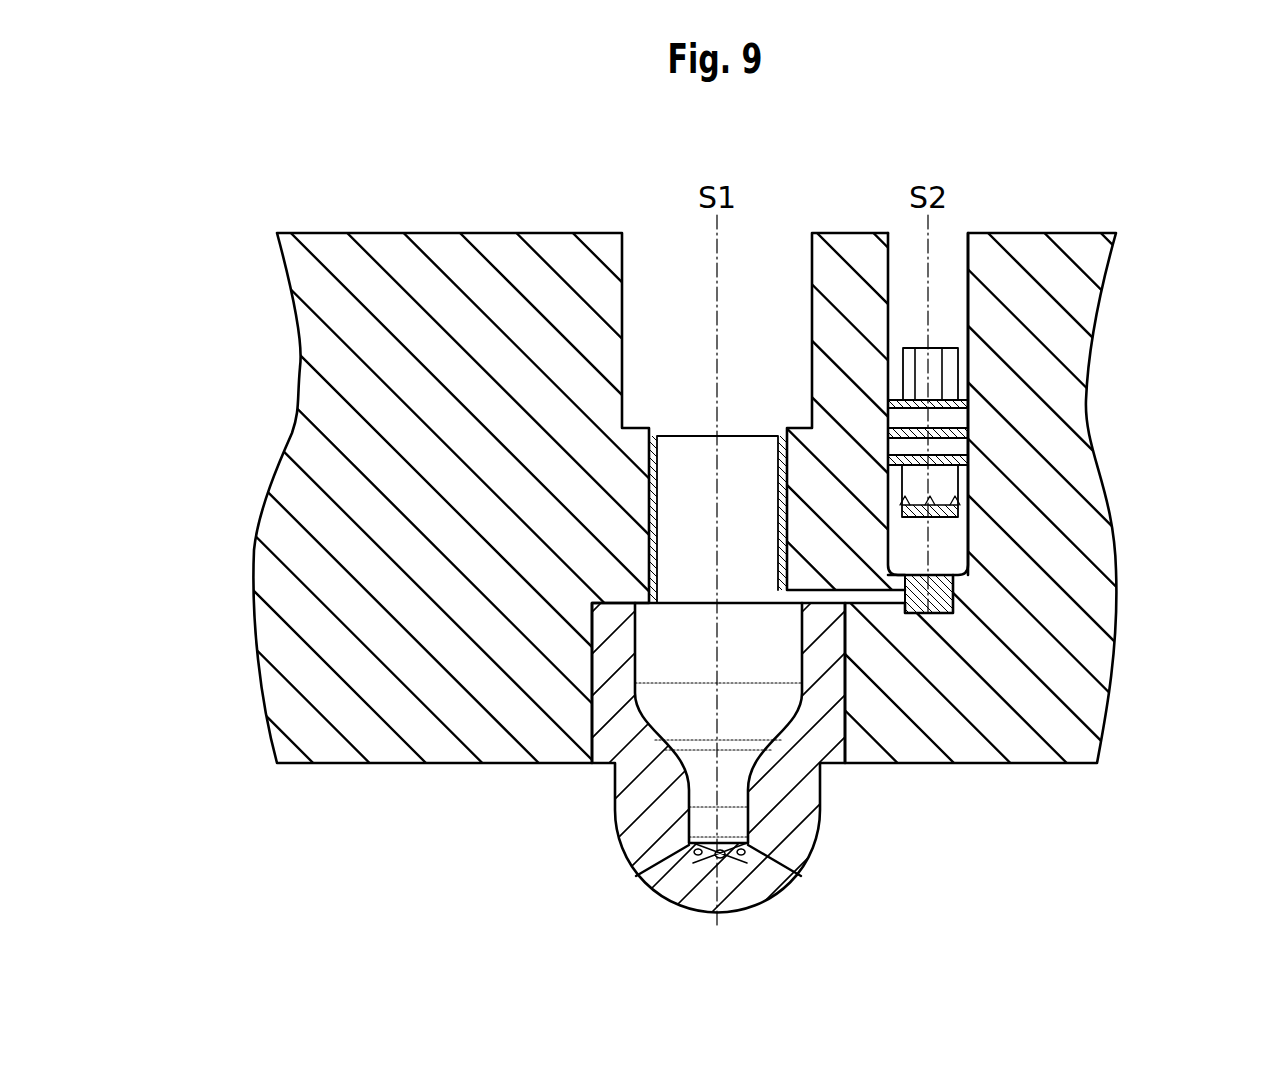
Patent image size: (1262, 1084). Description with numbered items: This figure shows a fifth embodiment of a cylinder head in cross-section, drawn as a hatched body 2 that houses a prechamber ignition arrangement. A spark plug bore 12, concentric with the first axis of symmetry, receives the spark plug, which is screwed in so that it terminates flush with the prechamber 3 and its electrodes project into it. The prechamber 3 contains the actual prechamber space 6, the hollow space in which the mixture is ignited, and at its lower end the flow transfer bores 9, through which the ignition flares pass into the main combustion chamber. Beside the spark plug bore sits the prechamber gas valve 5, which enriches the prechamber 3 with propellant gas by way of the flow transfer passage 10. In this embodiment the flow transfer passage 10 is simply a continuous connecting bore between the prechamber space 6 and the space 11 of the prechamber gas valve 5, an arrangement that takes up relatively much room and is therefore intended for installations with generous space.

The housing body 2 is at (1008, 400).
The prechamber 3 is at (803, 793).
The prechamber gas valve 5 is at (938, 543).
The prechamber space 6 is at (688, 674).
The flow transfer bores 9 is at (780, 877).
The flow transfer passage 10 is at (870, 614).
The space of the prechamber gas valve 11 is at (938, 598).
The spark plug bore 12 is at (680, 522).